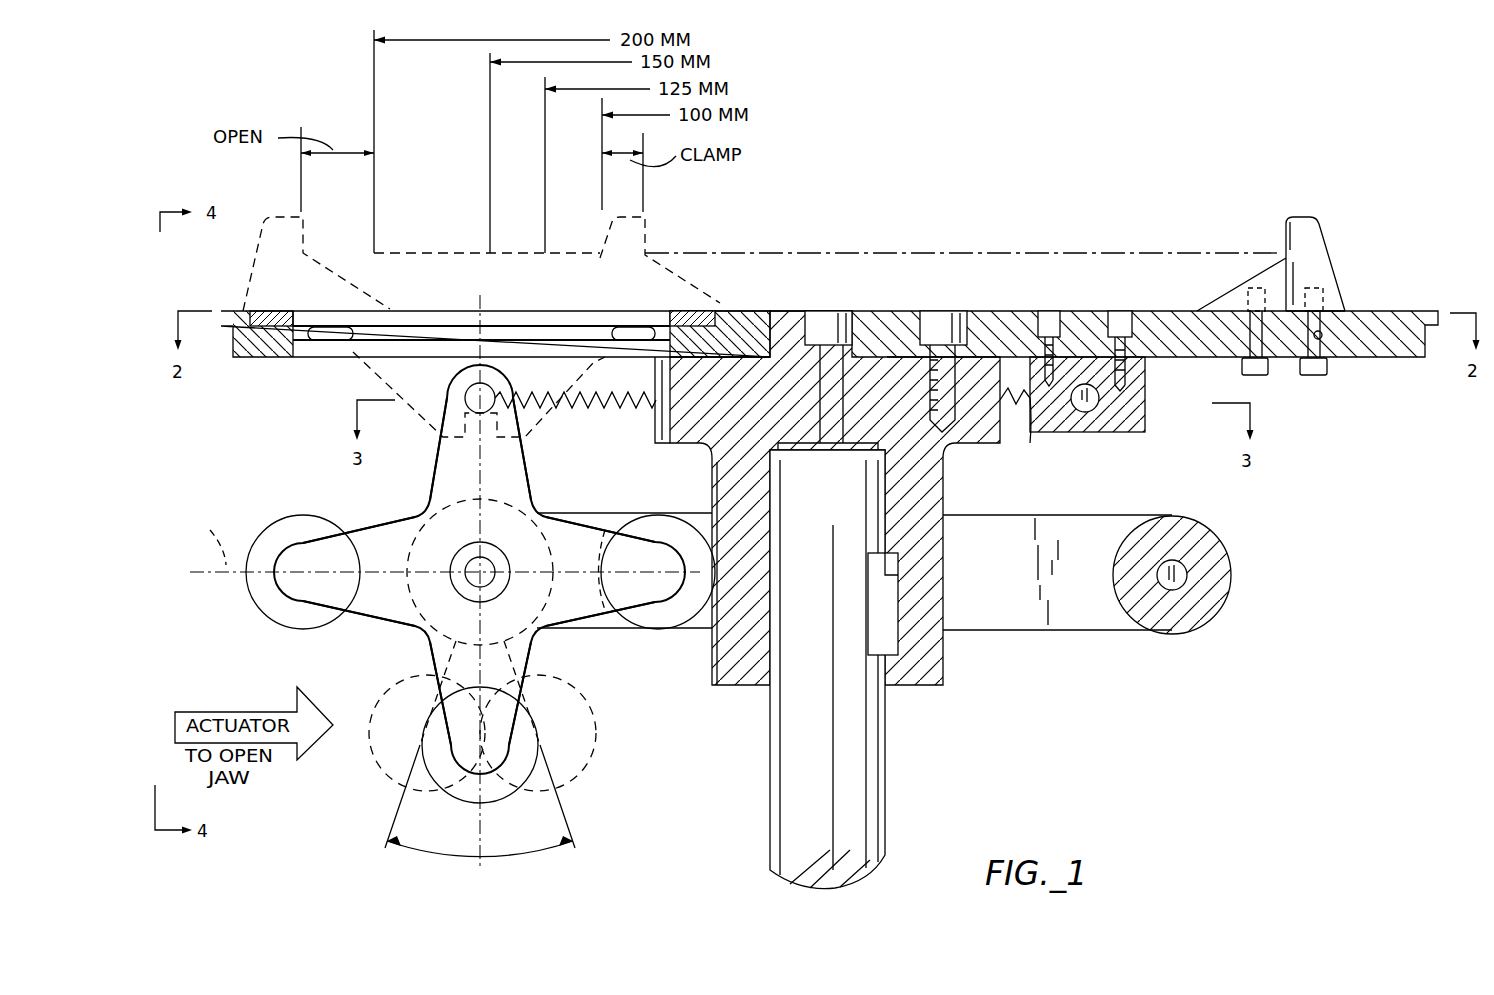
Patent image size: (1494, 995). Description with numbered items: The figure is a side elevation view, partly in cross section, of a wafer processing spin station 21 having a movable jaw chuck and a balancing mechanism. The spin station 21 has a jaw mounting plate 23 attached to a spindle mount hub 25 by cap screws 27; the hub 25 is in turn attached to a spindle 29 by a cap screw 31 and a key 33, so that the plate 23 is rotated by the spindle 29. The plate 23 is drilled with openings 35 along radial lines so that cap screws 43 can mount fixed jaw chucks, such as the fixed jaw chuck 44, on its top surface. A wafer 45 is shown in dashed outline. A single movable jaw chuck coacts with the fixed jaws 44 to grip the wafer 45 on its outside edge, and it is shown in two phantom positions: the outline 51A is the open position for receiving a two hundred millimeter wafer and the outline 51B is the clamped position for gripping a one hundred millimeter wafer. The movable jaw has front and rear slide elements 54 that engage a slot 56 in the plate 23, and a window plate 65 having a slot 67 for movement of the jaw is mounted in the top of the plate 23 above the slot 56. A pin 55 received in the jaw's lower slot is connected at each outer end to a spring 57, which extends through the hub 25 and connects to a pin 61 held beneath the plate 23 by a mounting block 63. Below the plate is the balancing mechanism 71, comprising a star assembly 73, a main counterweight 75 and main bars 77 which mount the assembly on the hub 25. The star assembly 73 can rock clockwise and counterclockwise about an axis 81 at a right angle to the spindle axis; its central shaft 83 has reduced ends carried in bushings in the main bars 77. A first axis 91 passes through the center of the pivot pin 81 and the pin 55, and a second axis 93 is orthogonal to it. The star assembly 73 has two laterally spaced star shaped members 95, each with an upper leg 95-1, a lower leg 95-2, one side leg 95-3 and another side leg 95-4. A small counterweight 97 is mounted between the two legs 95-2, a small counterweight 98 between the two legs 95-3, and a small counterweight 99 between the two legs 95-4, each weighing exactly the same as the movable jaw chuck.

The wafer processing spin station 21 is at (1378, 201).
The jaw mounting plate 23 is at (1420, 311).
The spindle mount hub 25 is at (935, 490).
The cap screws 27 is at (945, 320).
The spindle 29 is at (880, 705).
The cap screw 31 is at (833, 318).
The key 33 is at (900, 650).
The openings 35 is at (1321, 333).
The cap screws 43 is at (1263, 378).
The fixed jaw chuck 44 is at (1318, 258).
The wafer 45 is at (1152, 253).
The open position of movable jaw chuck 51A is at (250, 262).
The clamped position of movable jaw chuck 51B is at (688, 281).
The slide elements 54 is at (628, 332).
The pin 55 is at (466, 388).
The slot 56 is at (380, 338).
The spring 57 is at (1013, 405).
The pin 61 is at (1088, 408).
The mounting block 63 is at (1140, 408).
The window plate 65 is at (708, 313).
The slot 67 is at (490, 316).
The balancing mechanism 71 is at (250, 450).
The star assembly 73 is at (366, 522).
The main counterweight 75 is at (1210, 545).
The main bars 77 is at (1072, 620).
The axis 81 is at (485, 570).
The central shaft 83 is at (500, 560).
The first axis 91 is at (483, 825).
The second axis 93 is at (395, 562).
The star shaped member 95 is at (479, 569).
The upper leg 95-1 is at (458, 462).
The lower leg 95-2 is at (505, 668).
The side leg 95-3 is at (580, 538).
The side leg 95-4 is at (385, 632).
The small counterweight 97 is at (525, 752).
The small counterweight 98 is at (678, 620).
The small counterweight 99 is at (272, 603).